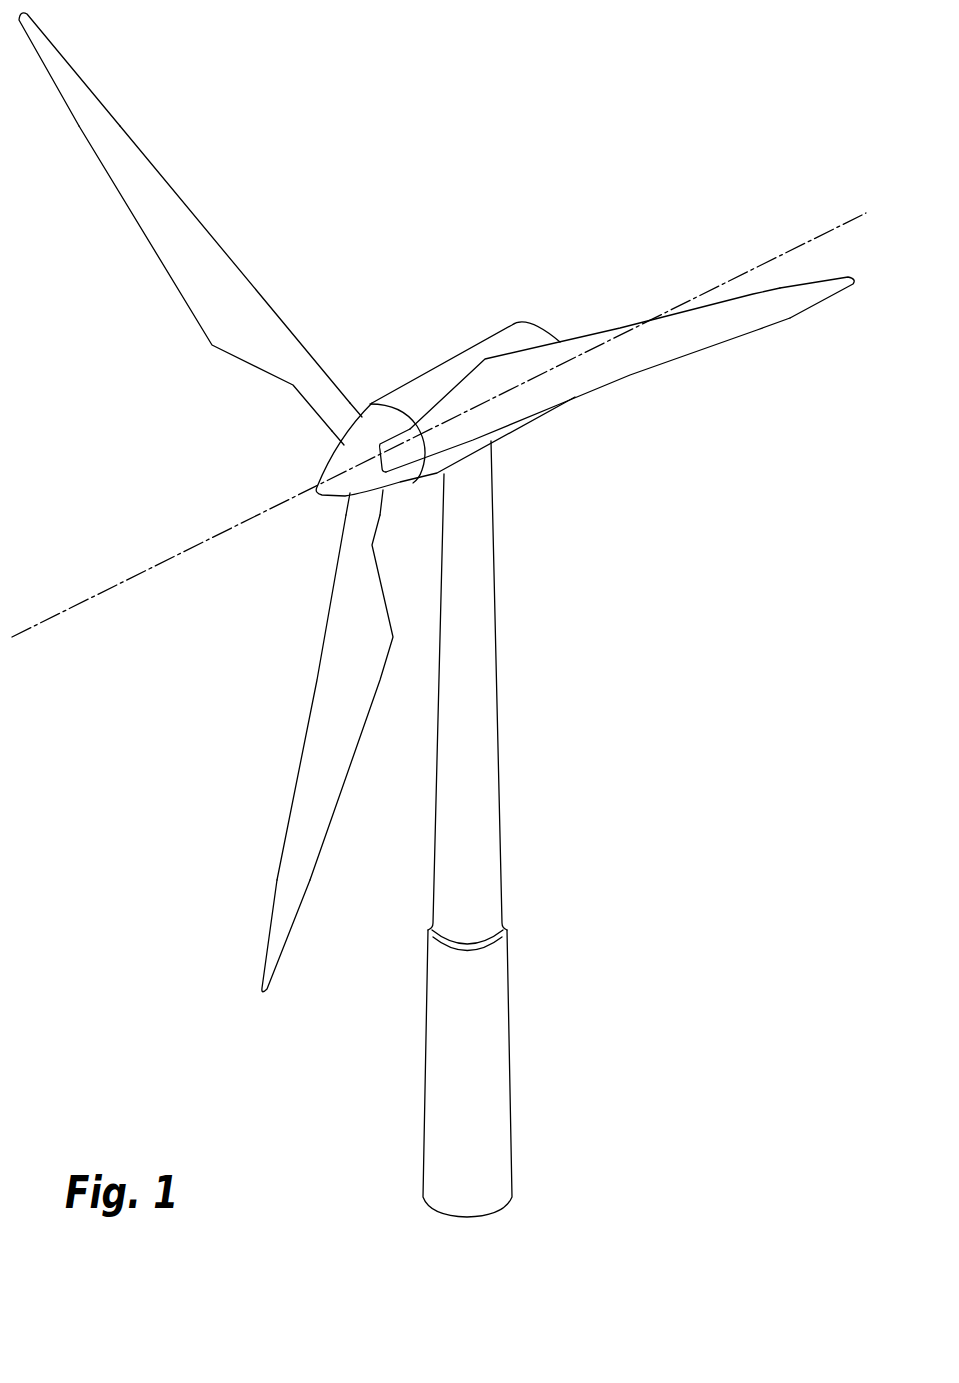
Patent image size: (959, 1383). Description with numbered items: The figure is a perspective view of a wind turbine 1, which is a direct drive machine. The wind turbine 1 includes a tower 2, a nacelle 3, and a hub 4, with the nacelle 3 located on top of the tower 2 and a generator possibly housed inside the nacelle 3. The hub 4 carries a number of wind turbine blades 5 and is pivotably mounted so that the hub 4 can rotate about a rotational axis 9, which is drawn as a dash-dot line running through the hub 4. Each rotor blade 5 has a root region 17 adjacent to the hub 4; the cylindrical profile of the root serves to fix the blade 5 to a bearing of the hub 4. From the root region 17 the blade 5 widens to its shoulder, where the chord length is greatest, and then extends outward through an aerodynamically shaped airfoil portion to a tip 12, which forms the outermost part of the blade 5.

The wind turbine 1 is at (602, 765).
The tower 2 is at (485, 686).
The nacelle 3 is at (432, 383).
The hub 4 is at (337, 470).
The wind turbine blade 5 is at (223, 317).
The rotational axis 9 is at (178, 555).
The tip 12 is at (64, 72).
The root region 17 is at (345, 423).